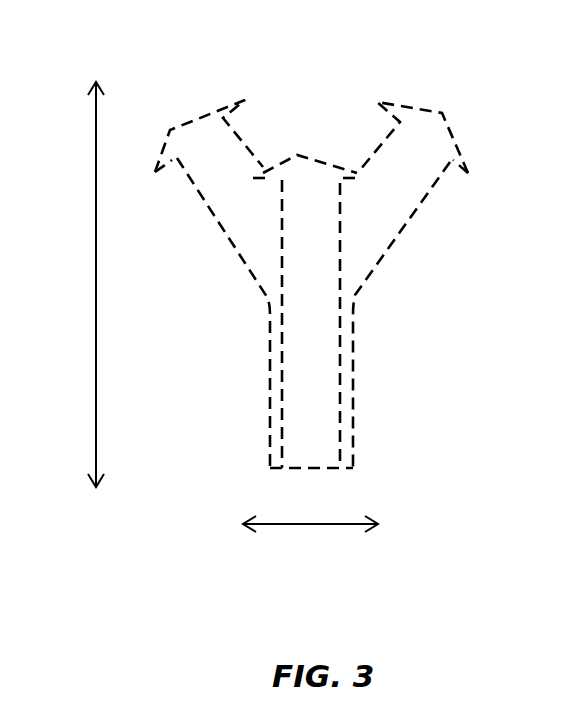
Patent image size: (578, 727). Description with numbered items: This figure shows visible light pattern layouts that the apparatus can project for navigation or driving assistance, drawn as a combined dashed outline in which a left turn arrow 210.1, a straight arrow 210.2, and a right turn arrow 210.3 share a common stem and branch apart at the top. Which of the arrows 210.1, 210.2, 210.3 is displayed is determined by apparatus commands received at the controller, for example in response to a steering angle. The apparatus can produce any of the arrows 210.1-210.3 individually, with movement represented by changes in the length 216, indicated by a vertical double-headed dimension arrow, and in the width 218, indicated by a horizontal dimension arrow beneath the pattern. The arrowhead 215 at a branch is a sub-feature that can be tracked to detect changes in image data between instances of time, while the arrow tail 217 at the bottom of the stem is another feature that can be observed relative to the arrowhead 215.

The arrowhead 215 is at (156, 122).
The left turn arrow 210.1 is at (270, 397).
The straight arrow 210.2 is at (300, 155).
The right turn arrow 210.3 is at (384, 243).
The length 216 is at (97, 418).
The arrow tail 217 is at (335, 490).
The width 218 is at (307, 525).